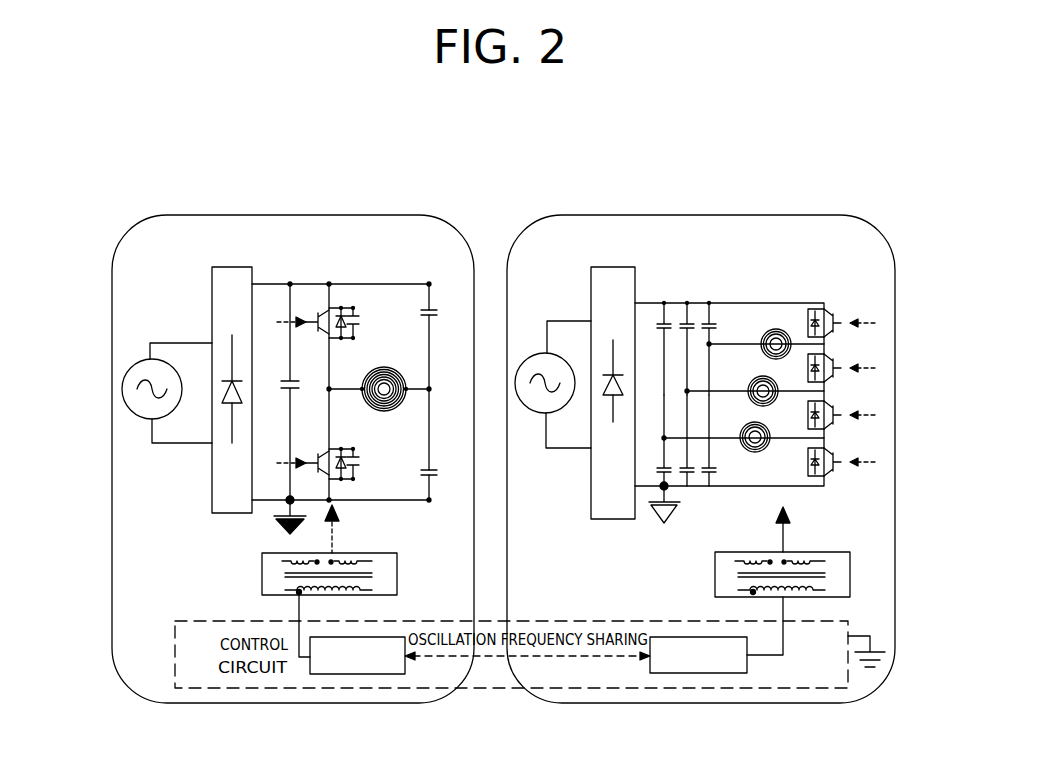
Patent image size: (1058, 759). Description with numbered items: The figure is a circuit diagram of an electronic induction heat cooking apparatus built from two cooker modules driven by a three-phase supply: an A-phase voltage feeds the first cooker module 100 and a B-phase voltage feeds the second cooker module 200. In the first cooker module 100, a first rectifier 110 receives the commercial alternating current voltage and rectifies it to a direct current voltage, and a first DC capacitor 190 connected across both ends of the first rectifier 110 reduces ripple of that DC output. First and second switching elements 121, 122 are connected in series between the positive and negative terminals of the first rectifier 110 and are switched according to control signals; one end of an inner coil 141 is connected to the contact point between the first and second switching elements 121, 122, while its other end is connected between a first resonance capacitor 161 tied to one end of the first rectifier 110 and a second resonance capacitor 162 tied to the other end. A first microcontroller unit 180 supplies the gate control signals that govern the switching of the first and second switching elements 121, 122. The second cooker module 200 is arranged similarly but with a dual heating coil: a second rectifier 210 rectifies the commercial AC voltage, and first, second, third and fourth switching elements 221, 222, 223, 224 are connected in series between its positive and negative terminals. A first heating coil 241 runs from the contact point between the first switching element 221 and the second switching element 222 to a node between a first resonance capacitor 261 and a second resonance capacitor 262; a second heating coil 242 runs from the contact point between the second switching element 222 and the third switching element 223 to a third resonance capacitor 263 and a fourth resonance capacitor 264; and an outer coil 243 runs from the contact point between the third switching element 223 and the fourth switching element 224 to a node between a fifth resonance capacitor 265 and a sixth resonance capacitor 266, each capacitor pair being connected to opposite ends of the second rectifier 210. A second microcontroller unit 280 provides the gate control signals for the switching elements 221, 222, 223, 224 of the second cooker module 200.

The first cooker module 100 is at (294, 215).
The first rectifier 110 is at (212, 322).
The first switching element 121 is at (343, 305).
The second switching element 122 is at (353, 477).
The inner coil 141 is at (384, 411).
The first resonance capacitor 161 is at (436, 317).
The second resonance capacitor 162 is at (436, 477).
The first microcontroller unit 180 is at (355, 674).
The first DC capacitor 190 is at (291, 378).
The second cooker module 200 is at (800, 216).
The second rectifier 210 is at (591, 303).
The first switching element 221 is at (838, 318).
The second switching element 222 is at (838, 364).
The third switching element 223 is at (838, 411).
The fourth switching element 224 is at (838, 458).
The first heating coil 241 is at (776, 329).
The second heating coil 242 is at (760, 376).
The outer coil 243 is at (766, 448).
The first resonance capacitor 261 is at (709, 303).
The second resonance capacitor 262 is at (709, 477).
The third resonance capacitor 263 is at (687, 303).
The fourth resonance capacitor 264 is at (690, 477).
The fifth resonance capacitor 265 is at (664, 303).
The sixth resonance capacitor 266 is at (664, 487).
The second microcontroller unit 280 is at (697, 674).